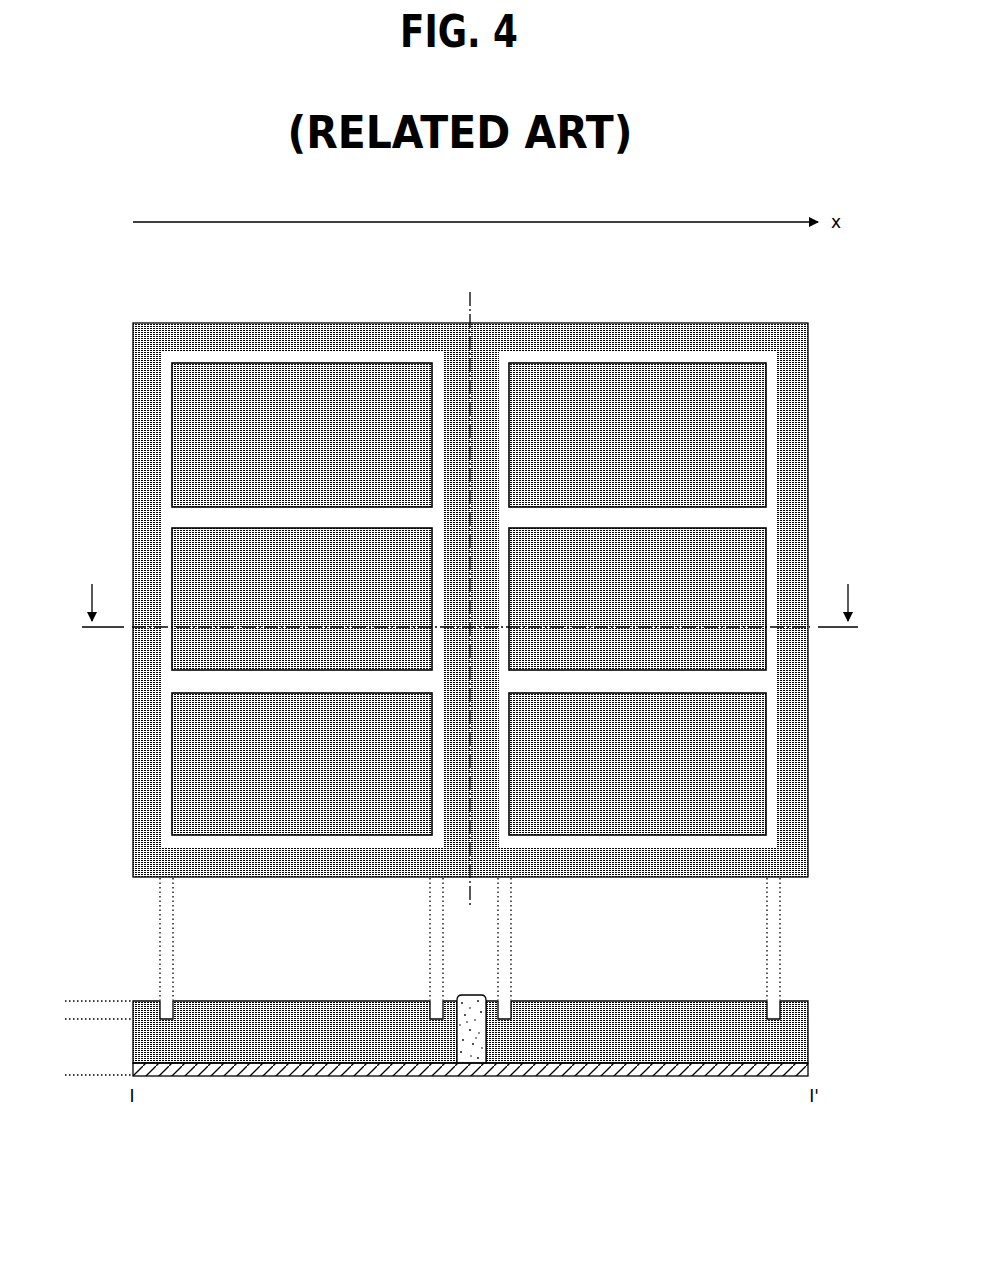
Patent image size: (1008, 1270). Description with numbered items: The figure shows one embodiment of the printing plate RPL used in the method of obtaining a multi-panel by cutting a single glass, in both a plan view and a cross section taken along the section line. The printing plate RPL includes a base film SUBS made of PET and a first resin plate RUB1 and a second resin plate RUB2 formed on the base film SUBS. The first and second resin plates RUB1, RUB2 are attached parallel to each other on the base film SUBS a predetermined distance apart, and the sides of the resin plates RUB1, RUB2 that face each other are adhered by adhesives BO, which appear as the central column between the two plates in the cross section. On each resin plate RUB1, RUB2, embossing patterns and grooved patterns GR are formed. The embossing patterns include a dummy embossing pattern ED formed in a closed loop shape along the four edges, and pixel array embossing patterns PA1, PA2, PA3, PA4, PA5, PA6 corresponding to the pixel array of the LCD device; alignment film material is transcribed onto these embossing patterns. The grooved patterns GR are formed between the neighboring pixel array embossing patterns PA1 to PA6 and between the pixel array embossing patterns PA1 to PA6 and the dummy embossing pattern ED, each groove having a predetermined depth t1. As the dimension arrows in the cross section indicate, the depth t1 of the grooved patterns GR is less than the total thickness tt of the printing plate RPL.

The printing plate RPL is at (124, 306).
The dummy embossing pattern ED is at (455, 367).
The grooved pattern GR is at (750, 517).
The pixel array embossing pattern PA1 is at (283, 446).
The pixel array embossing pattern PA2 is at (618, 446).
The pixel array embossing pattern PA3 is at (283, 611).
The pixel array embossing pattern PA4 is at (618, 611).
The pixel array embossing pattern PA5 is at (283, 776).
The pixel array embossing pattern PA6 is at (618, 776).
The adhesive BO is at (471, 994).
The first resin plate RUB1 is at (280, 1052).
The second resin plate RUB2 is at (640, 1054).
The base film SUBS is at (418, 1077).
The depth of the grooved patterns t1 is at (113, 976).
The printing plate thickness tt is at (77, 1002).